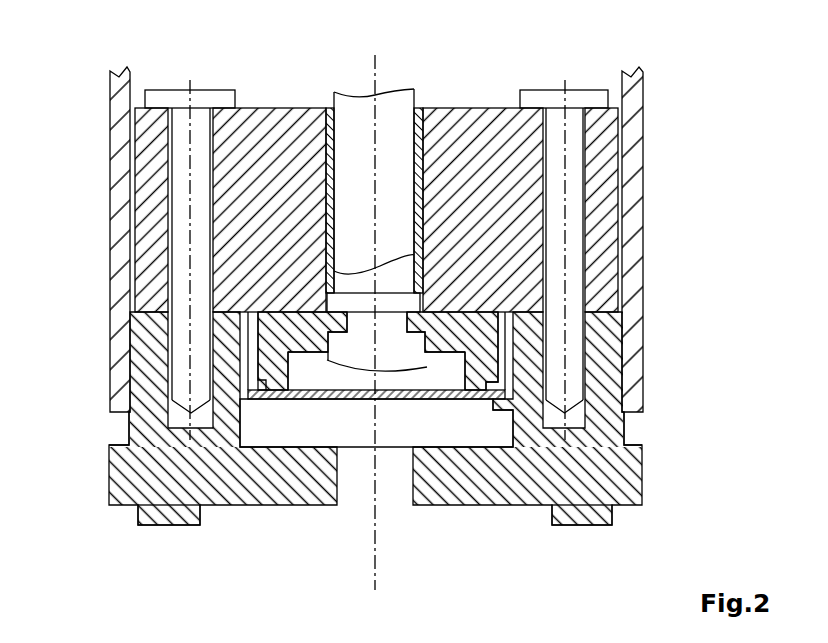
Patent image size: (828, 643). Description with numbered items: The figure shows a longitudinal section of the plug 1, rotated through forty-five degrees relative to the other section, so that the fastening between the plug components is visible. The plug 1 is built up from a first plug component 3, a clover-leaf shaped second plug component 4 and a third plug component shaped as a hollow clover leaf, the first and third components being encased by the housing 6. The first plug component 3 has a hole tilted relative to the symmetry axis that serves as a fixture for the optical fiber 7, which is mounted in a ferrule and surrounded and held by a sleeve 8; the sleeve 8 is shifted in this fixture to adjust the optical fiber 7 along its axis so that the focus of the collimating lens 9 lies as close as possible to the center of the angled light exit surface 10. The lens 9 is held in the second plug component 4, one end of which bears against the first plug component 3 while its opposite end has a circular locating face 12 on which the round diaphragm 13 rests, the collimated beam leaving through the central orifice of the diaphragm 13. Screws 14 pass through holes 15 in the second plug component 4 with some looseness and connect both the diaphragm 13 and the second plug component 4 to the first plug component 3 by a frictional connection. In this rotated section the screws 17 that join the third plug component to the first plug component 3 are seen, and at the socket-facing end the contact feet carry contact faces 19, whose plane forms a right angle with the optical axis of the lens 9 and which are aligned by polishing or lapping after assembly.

The plug 1 is at (88, 126).
The first plug component 3 is at (272, 118).
The second plug component 4 is at (508, 341).
The housing 6 is at (638, 146).
The optical fiber 7 is at (380, 98).
The sleeve 8 is at (418, 112).
The lens 9 is at (427, 367).
The exit surface 10 is at (420, 264).
The locating face 12 is at (493, 401).
The diaphragm 13 is at (445, 400).
The screws 14 is at (248, 385).
The holes 15 is at (256, 357).
The screws 17 is at (178, 219).
The contact faces 19 is at (162, 526).